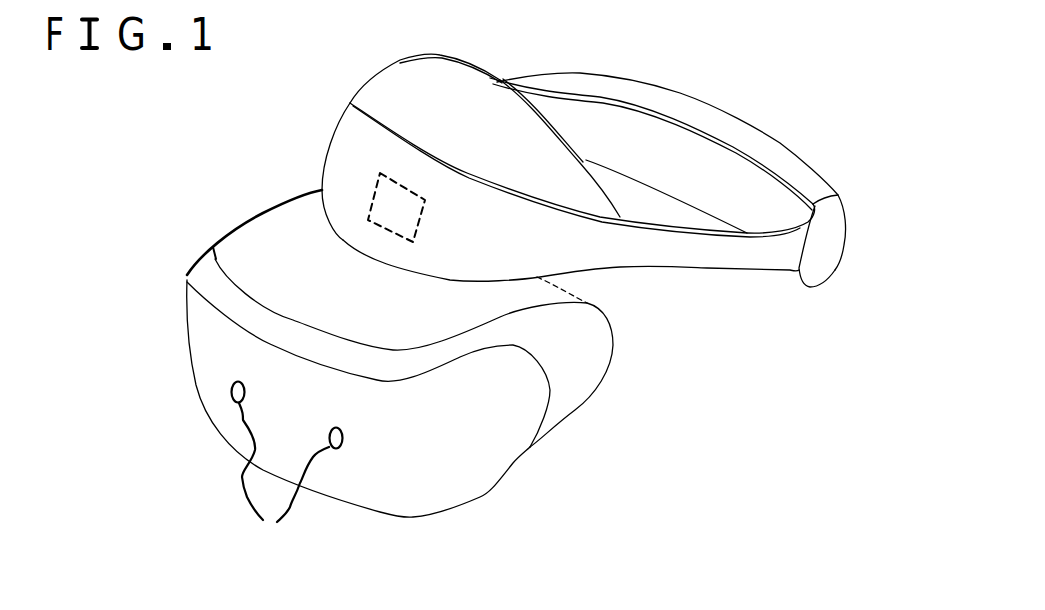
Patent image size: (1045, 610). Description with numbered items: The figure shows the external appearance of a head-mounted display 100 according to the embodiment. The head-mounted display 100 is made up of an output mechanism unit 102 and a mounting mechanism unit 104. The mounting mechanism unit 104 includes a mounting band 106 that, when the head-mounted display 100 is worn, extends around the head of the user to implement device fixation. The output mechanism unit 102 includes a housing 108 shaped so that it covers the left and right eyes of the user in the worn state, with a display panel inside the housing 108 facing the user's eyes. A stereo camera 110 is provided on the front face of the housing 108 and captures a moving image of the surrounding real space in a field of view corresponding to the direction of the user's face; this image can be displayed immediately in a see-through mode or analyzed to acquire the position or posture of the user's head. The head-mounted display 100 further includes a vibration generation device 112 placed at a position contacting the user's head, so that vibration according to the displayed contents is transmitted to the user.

The head-mounted display 100 is at (293, 131).
The output mechanism unit 102 is at (142, 183).
The mounting mechanism unit 104 is at (850, 118).
The mounting band 106 is at (707, 270).
The housing 108 is at (497, 483).
The stereo camera 110 is at (287, 470).
The vibration generation device 112 is at (378, 180).